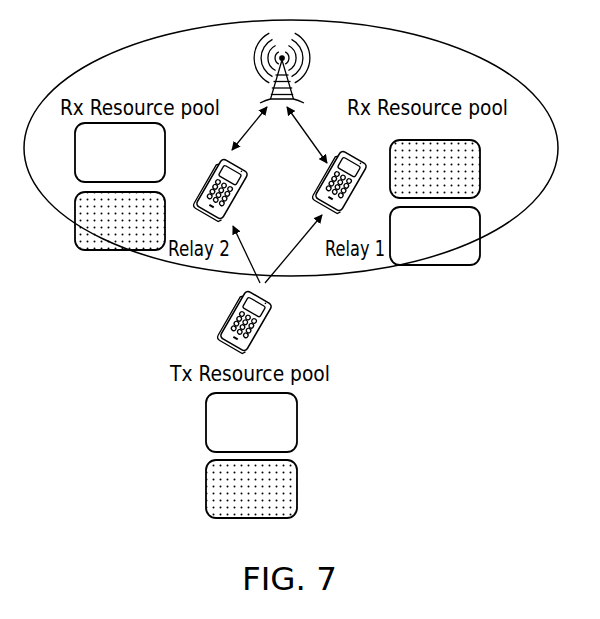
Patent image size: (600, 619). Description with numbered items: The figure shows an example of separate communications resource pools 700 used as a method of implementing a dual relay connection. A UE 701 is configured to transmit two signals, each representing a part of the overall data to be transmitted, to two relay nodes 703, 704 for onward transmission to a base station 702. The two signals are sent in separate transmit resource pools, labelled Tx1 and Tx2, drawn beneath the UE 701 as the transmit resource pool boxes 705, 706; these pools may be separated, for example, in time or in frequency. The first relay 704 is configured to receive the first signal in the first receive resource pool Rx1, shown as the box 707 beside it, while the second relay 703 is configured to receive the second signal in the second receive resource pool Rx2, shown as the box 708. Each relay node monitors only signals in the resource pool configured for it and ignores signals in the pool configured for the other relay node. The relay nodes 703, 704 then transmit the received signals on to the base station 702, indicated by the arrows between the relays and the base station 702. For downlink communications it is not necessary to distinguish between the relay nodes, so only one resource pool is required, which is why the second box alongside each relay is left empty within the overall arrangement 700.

The separate communications resource pools 700 is at (572, 67).
The UE 701 is at (269, 321).
The base station 702 is at (310, 68).
The second relay node 703 is at (241, 189).
The first relay node 704 is at (344, 170).
The Tx resource pool Tx1 705 is at (279, 422).
The Tx resource pool Tx2 706 is at (279, 489).
The Rx resource pool Rx1 707 is at (461, 169).
The Rx resource pool Rx2 708 is at (95, 228).